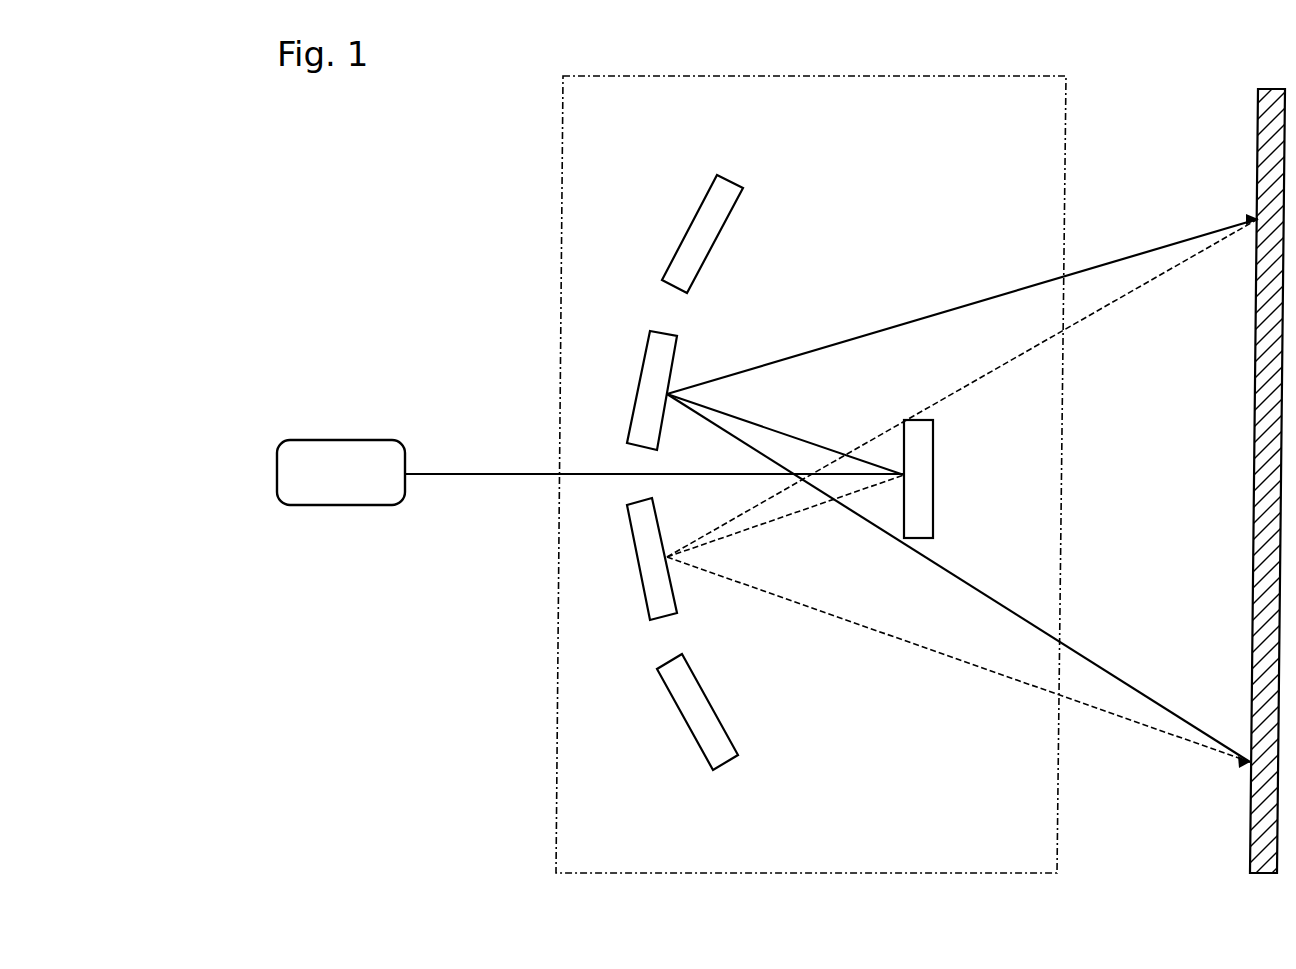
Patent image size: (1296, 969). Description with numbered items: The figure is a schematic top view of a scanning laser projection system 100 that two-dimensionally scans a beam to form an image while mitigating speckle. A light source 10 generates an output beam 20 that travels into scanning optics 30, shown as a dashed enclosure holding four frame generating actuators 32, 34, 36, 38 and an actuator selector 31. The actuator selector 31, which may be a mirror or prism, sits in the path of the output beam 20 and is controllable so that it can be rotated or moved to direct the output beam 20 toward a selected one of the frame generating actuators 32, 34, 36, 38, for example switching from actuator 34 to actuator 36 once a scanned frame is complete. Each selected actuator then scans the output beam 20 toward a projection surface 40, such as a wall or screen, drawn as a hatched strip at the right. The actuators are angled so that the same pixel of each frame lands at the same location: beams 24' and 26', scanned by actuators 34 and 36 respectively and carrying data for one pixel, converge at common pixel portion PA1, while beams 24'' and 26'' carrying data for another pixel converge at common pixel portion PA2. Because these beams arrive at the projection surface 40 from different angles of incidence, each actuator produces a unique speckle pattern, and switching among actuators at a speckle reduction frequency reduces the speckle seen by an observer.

The laser projection system 100 is at (478, 163).
The light source 10 is at (372, 440).
The output beam 20 is at (512, 472).
The scanning optics 30 is at (583, 76).
The actuator selector 31 is at (935, 450).
The frame generating actuator 32 is at (708, 190).
The frame generating actuator 34 is at (646, 360).
The frame generating actuator 36 is at (641, 574).
The frame generating actuator 38 is at (697, 745).
The output beam 24' is at (962, 306).
The output beam 24'' is at (958, 578).
The output beam 26' is at (962, 388).
The output beam 26'' is at (958, 659).
The projection surface 40 is at (1258, 122).
The common pixel portion PA1 is at (1252, 219).
The common pixel portion PA2 is at (1248, 770).